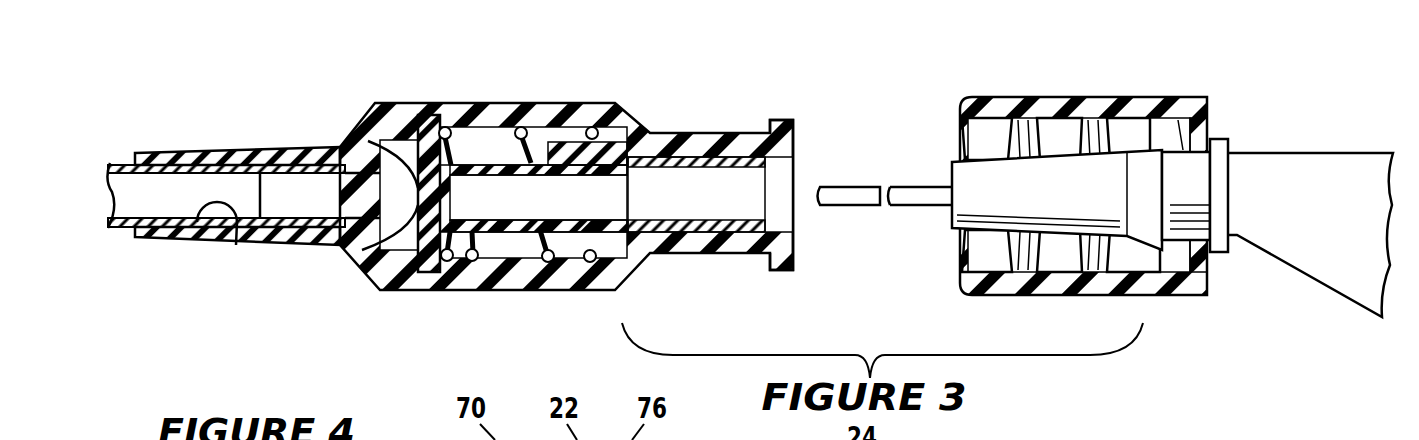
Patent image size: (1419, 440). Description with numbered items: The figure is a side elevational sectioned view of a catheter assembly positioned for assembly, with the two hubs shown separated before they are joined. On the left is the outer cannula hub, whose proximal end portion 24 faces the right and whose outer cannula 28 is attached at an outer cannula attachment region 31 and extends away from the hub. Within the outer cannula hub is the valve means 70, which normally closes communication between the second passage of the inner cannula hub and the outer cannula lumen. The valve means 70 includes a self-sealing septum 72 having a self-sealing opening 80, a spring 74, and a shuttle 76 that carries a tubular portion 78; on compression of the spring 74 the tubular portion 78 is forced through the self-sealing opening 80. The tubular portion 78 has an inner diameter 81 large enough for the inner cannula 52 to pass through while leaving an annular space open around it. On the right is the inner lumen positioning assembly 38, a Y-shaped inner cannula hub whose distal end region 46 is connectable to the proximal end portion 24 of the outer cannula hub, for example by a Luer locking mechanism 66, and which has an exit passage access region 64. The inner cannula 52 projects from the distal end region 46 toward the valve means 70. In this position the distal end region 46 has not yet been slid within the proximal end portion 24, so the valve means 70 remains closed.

The proximal end portion 24 is at (757, 262).
The outer cannula 28 is at (121, 155).
The outer cannula attachment region 31 is at (236, 246).
The inner lumen positioning assembly 38 is at (1362, 145).
The distal end region 46 is at (1006, 250).
The inner cannula 52 is at (846, 182).
The exit passage access region 64 is at (947, 177).
The Luer locking mechanism 66 is at (936, 285).
The valve means 70 is at (432, 318).
The self-sealing septum 72 is at (368, 141).
The spring 74 is at (526, 250).
The shuttle 76 is at (600, 262).
The tubular portion 78 is at (488, 248).
The self-sealing opening 80 is at (362, 244).
The inner diameter 81 is at (577, 175).